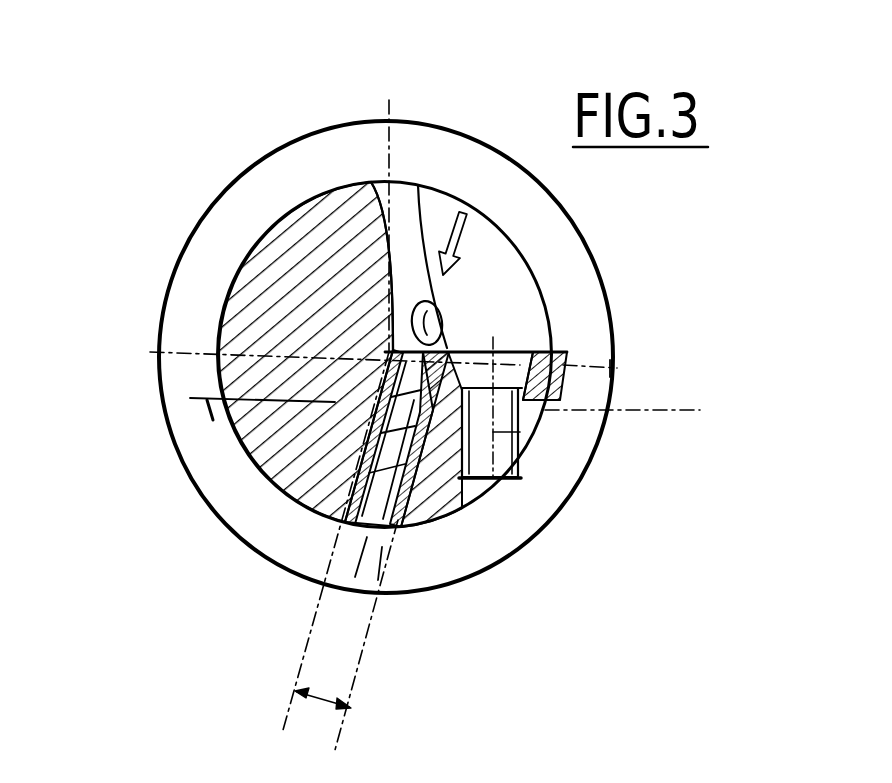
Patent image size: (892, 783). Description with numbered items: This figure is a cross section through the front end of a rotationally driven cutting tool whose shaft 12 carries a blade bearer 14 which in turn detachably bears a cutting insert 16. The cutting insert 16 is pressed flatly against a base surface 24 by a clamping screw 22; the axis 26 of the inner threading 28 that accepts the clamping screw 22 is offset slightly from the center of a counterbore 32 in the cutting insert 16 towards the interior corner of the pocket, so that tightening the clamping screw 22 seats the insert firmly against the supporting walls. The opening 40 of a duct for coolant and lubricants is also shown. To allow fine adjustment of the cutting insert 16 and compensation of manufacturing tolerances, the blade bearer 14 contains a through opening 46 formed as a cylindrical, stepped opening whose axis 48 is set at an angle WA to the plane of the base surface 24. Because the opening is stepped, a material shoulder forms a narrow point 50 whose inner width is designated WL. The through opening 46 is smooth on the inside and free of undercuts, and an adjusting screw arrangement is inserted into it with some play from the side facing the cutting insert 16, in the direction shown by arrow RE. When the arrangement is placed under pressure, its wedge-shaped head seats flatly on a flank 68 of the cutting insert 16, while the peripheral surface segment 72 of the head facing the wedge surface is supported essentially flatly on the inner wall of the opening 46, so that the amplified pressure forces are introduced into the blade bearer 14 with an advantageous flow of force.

The shaft 12 is at (300, 155).
The blade bearer 14 is at (260, 270).
The cutting insert 16 is at (567, 350).
The clamping screw 22 is at (497, 432).
The base surface 24 is at (562, 378).
The axis 26 is at (520, 477).
The inner threading 28 is at (467, 497).
The counterbore 32 is at (527, 352).
The opening of a duct for coolant and lubricants 40 is at (441, 303).
The through opening 46 is at (212, 422).
The axis 48 is at (340, 527).
The narrow point 50 is at (345, 552).
The flank 68 is at (420, 350).
The peripheral surface segment 72 is at (388, 345).
The arrow indicating direction of placement RE is at (418, 185).
The angle WA is at (257, 503).
The inner width of the narrow point WL is at (297, 690).